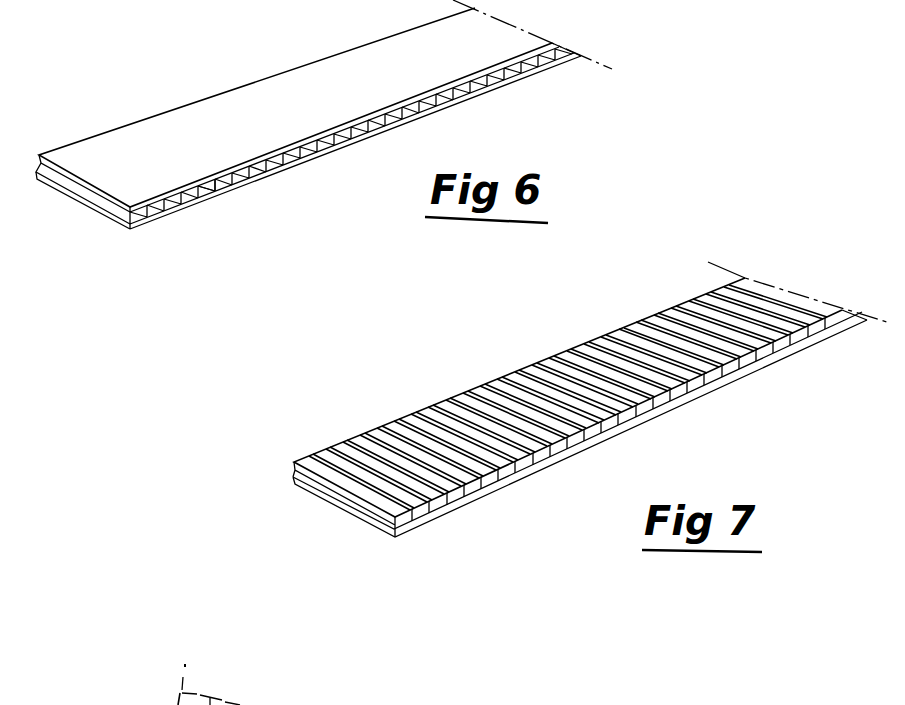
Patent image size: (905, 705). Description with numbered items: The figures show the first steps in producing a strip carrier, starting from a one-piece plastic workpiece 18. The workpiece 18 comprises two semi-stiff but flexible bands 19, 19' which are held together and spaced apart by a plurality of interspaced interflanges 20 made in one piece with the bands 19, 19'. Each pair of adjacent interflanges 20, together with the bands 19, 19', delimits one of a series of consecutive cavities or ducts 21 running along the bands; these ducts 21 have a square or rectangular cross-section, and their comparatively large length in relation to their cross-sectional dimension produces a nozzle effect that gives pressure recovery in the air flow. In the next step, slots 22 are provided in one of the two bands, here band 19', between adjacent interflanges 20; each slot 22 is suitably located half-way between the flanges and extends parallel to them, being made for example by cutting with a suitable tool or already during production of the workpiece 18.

In FIG. 6, the starting workpiece 18 is at (170, 108).
In FIG. 6, the band 19 is at (308, 142).
In FIG. 7, the band 19 is at (580, 424).
In FIG. 6, the band 19' is at (299, 129).
In FIG. 6, the interflanges 20 is at (182, 208).
In FIG. 7, the interflanges 20 is at (472, 494).
In FIG. 6, the ducts 21 is at (214, 189).
In FIG. 7, the slots 22 is at (437, 413).